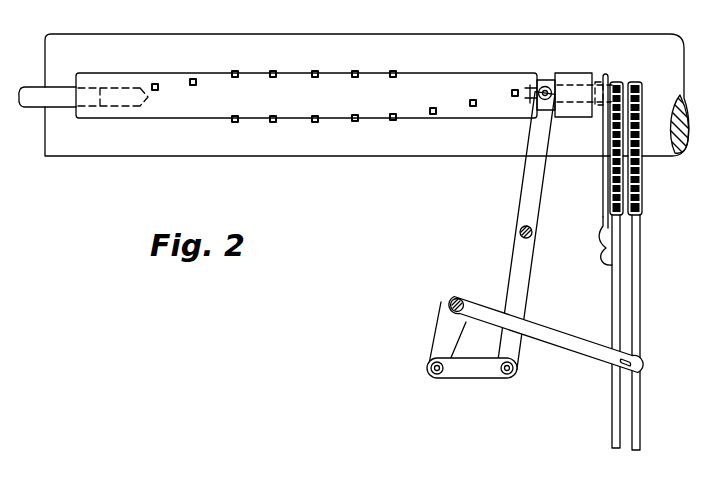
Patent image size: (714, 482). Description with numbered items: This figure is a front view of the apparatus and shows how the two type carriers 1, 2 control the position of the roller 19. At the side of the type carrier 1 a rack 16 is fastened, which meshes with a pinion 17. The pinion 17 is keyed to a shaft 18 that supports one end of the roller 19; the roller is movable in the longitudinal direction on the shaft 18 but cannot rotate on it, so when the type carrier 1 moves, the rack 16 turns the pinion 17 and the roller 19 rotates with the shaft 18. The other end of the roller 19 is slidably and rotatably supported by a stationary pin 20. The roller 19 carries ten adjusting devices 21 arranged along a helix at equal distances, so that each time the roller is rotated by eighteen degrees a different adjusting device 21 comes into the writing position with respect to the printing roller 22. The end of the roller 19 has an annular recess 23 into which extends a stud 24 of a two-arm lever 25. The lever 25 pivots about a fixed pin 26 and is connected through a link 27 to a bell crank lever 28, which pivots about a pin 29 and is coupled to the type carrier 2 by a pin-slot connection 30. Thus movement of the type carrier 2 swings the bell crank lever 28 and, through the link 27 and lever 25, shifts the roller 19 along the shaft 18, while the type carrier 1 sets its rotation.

The type carrier 1 is at (615, 293).
The type carrier 2 is at (640, 293).
The rack 16 is at (611, 185).
The pinion 17 is at (609, 80).
The shaft 18 is at (585, 80).
The roller 19 is at (181, 108).
The stationary pin 20 is at (54, 97).
The adjusting devices 21 is at (314, 72).
The printing roller 22 is at (138, 52).
The annular recess 23 is at (547, 75).
The stud 24 is at (530, 101).
The two-arm lever 25 is at (527, 185).
The fixed pin 26 is at (518, 232).
The link 27 is at (468, 372).
The bell crank lever 28 is at (446, 332).
The pin 29 is at (450, 303).
The pin-slot connection 30 is at (641, 366).